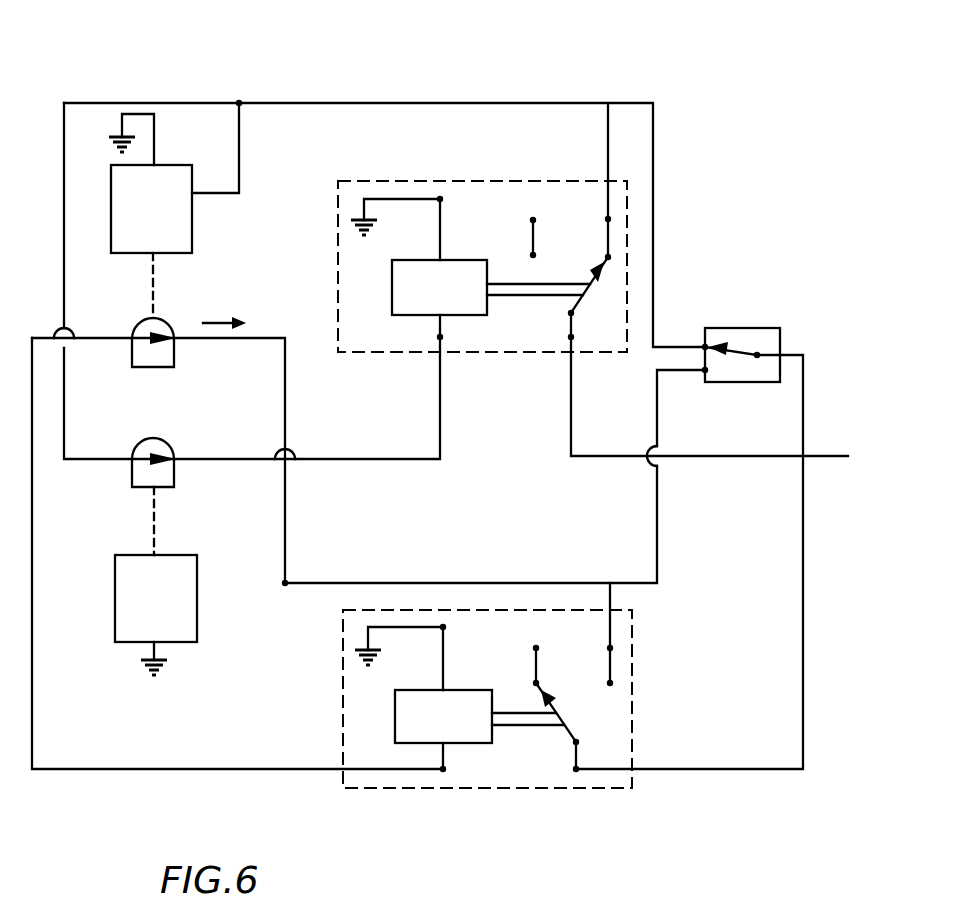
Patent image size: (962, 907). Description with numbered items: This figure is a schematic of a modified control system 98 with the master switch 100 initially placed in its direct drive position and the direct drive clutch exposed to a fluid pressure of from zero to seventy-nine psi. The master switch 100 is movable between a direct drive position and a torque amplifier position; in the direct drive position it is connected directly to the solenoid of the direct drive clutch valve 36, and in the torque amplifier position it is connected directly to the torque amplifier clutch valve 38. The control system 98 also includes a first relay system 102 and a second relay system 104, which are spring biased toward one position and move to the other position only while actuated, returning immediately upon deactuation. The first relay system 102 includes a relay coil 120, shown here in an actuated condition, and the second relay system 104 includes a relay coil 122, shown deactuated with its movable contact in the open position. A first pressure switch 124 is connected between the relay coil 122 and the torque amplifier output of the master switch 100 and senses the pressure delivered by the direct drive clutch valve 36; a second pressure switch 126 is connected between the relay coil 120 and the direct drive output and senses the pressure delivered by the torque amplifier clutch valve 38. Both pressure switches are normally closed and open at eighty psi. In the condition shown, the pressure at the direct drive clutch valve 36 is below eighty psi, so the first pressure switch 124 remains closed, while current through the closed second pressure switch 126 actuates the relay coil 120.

The control system 98 is at (163, 53).
The direct drive clutch valve 36 is at (111, 225).
The torque amplifier clutch valve 38 is at (125, 555).
The first pressure switch 124 is at (150, 320).
The second pressure switch 126 is at (148, 440).
The first relay system 102 is at (493, 181).
The second relay system 104 is at (343, 675).
The master switch 100 is at (752, 328).
The relay coil 120 is at (467, 307).
The relay coil 122 is at (482, 742).